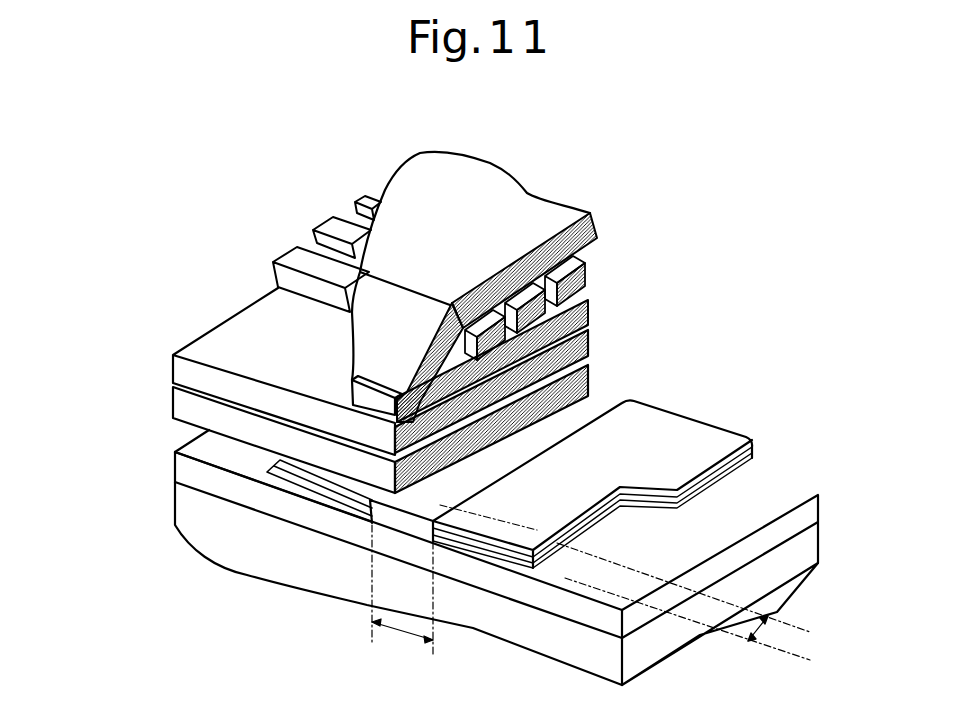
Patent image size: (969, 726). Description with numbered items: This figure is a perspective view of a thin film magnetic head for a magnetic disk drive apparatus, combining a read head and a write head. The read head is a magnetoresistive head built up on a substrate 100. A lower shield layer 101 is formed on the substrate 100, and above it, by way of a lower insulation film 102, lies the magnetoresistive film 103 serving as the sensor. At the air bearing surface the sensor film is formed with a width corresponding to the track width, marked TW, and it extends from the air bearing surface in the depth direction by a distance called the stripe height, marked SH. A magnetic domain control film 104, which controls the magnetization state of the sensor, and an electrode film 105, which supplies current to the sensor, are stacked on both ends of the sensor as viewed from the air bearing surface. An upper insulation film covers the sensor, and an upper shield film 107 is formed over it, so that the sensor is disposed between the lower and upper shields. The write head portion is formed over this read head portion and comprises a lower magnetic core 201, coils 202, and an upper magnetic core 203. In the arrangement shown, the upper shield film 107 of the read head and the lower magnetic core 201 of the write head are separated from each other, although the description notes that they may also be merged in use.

The substrate 100 is at (230, 518).
The lower shield layer 101 is at (233, 497).
The lower insulation film 102 is at (330, 505).
The magnetoresistive film 103 is at (375, 490).
The magnetic domain control film 104 is at (255, 497).
The electrode film 105 is at (278, 461).
The upper shield film 107 is at (200, 407).
The lower magnetic core 201 is at (363, 432).
The coils 202 is at (588, 267).
The upper magnetic core 203 is at (372, 323).